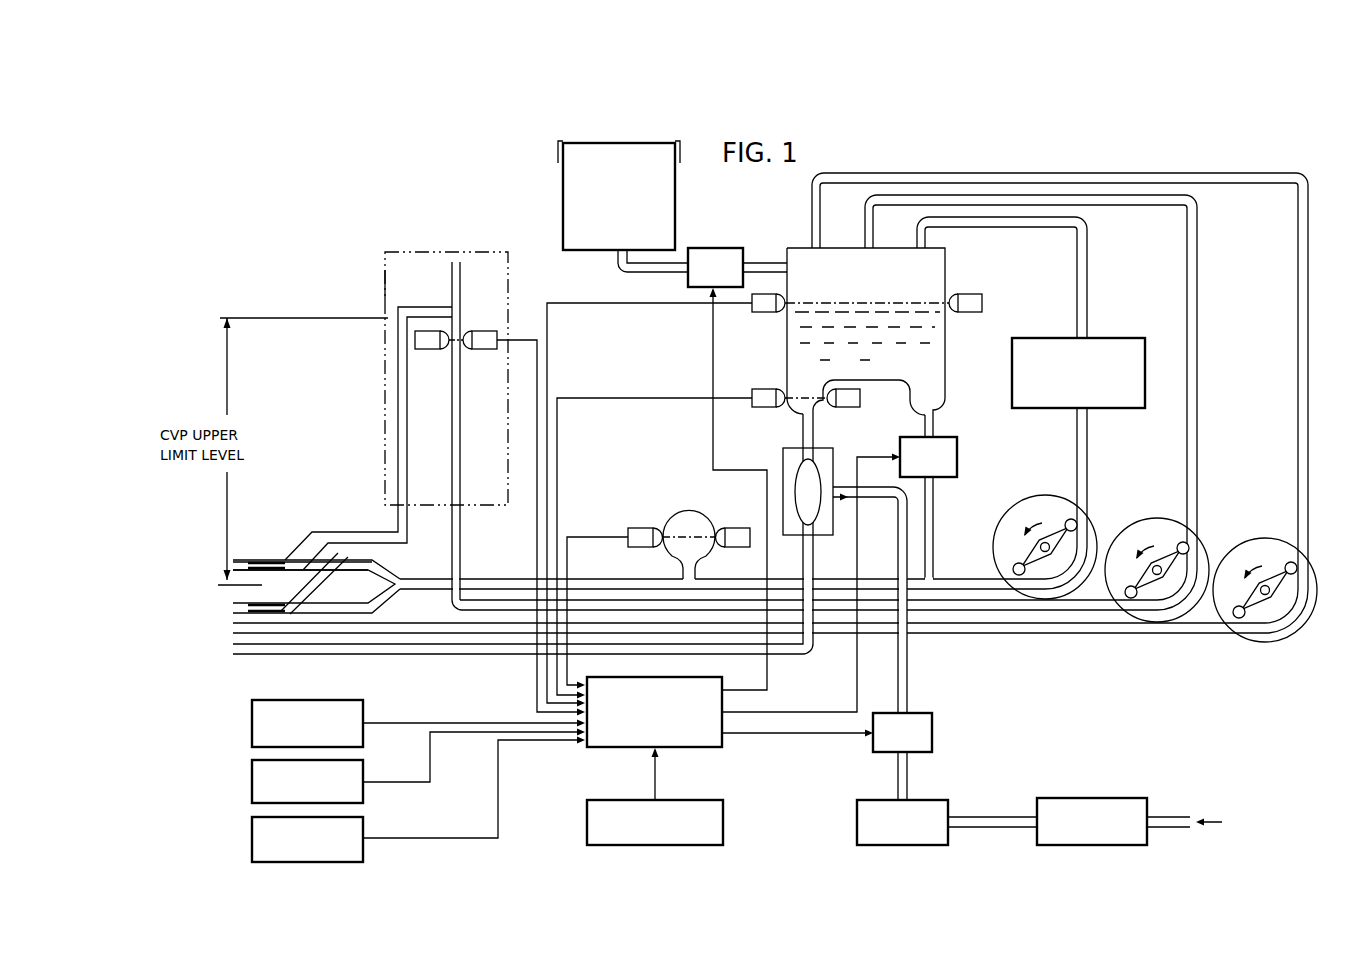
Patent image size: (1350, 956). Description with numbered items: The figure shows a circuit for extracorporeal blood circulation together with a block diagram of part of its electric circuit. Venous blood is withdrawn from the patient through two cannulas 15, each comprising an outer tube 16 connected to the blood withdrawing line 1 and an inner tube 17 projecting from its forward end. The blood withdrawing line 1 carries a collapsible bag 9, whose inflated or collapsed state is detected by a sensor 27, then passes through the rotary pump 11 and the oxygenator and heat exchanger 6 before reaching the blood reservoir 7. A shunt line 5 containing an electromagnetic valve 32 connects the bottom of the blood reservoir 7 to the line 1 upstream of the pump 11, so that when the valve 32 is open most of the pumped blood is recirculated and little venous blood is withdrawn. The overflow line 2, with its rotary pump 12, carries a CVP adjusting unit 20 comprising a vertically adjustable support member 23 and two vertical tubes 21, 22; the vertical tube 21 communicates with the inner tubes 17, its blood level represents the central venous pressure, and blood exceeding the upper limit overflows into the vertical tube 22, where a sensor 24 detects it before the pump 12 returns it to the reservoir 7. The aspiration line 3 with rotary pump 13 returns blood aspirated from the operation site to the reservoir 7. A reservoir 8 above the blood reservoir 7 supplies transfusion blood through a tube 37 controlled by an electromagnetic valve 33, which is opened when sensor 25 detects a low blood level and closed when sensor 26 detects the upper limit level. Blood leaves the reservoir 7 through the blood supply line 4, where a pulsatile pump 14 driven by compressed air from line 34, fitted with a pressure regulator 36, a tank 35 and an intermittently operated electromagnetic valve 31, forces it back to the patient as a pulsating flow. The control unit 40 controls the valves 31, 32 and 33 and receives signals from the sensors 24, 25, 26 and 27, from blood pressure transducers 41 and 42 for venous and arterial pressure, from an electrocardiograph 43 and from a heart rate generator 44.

The blood withdrawing line 1 is at (963, 578).
The overflow line 2 is at (1197, 481).
The aspiration line 3 is at (1308, 489).
The blood supply line 4 is at (438, 657).
The shunt line 5 is at (933, 503).
The oxygenator and heat exchanger 6 is at (1124, 338).
The blood reservoir 7 is at (948, 360).
The reservoir 8 is at (675, 188).
The collapsible bag 9 is at (689, 512).
The rotary pump 11 is at (1048, 505).
The rotary pump 12 is at (1152, 522).
The rotary pump 13 is at (1257, 545).
The pulsatile pump 14 is at (782, 455).
The cannula 15 is at (230, 605).
The outer tube 16 is at (332, 505).
The inner tube 17 is at (290, 520).
The CVP adjusting unit 20 is at (370, 244).
The vertical tube 21 is at (407, 420).
The vertical tube 22 is at (460, 430).
The support member 23 is at (383, 297).
The sensor 24 is at (485, 350).
The sensor 25 is at (766, 390).
The sensor 26 is at (765, 312).
The sensor 27 is at (642, 526).
The electromagnetic valve 31 is at (932, 733).
The electromagnetic valve 32 is at (957, 456).
The electromagnetic valve 33 is at (738, 248).
The line 34 is at (907, 660).
The tank 35 is at (950, 806).
The pressure regulator 36 is at (1113, 798).
The tube 37 is at (618, 270).
The control unit 40 is at (715, 748).
The blood pressure transducer 41 is at (252, 722).
The blood pressure transducer 42 is at (252, 782).
The electrocardiograph 43 is at (252, 840).
The heart rate generator 44 is at (723, 832).